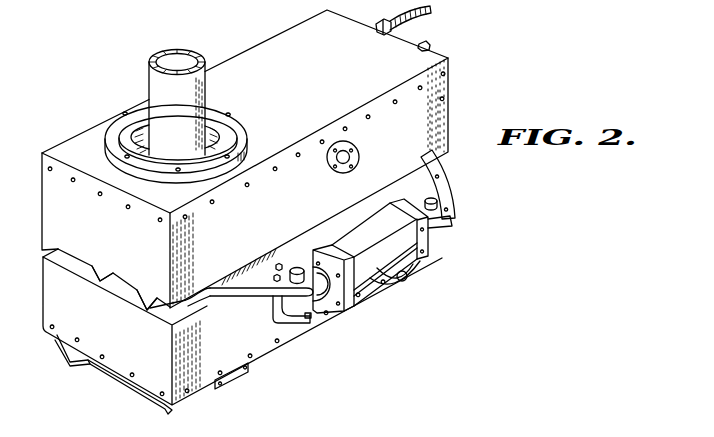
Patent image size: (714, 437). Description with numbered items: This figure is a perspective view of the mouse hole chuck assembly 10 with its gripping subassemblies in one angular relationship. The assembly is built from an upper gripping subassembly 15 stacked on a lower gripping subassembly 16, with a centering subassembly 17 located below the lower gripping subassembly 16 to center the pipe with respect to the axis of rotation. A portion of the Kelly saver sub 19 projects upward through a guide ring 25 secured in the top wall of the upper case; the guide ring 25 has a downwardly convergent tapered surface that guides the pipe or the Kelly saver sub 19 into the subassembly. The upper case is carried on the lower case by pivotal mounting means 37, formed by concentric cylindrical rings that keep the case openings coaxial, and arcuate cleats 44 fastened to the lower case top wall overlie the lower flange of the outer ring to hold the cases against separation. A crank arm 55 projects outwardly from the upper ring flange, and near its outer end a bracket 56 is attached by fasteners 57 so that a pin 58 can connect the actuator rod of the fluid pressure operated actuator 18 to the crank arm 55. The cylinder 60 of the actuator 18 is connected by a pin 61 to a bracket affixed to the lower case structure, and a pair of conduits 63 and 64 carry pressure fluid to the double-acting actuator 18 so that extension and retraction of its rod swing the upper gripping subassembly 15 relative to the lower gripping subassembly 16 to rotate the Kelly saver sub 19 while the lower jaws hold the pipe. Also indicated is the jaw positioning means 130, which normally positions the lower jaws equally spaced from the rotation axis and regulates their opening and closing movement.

The apparatus / upper housing 10 is at (470, 78).
The upper gripping subassembly 15 is at (434, 49).
The lower gripping subassembly 16 is at (133, 352).
The centering subassembly 17 is at (275, 360).
The fluid pressure operated actuator 18 is at (420, 247).
The Kelly saver sub 19 is at (155, 91).
The guide ring 25 is at (243, 131).
The pivotal mounting means 37 is at (120, 285).
The arcuate cleats 44 is at (145, 307).
The crank arm 55 is at (247, 297).
The bracket 56 is at (311, 320).
The fasteners 57 is at (275, 275).
The pin 58 is at (297, 267).
The cylinder 60 is at (372, 276).
The pin 61 is at (438, 200).
The conduit 63 is at (420, 263).
The conduit 64 is at (410, 287).
The jaw positioning means 130 is at (619, 426).